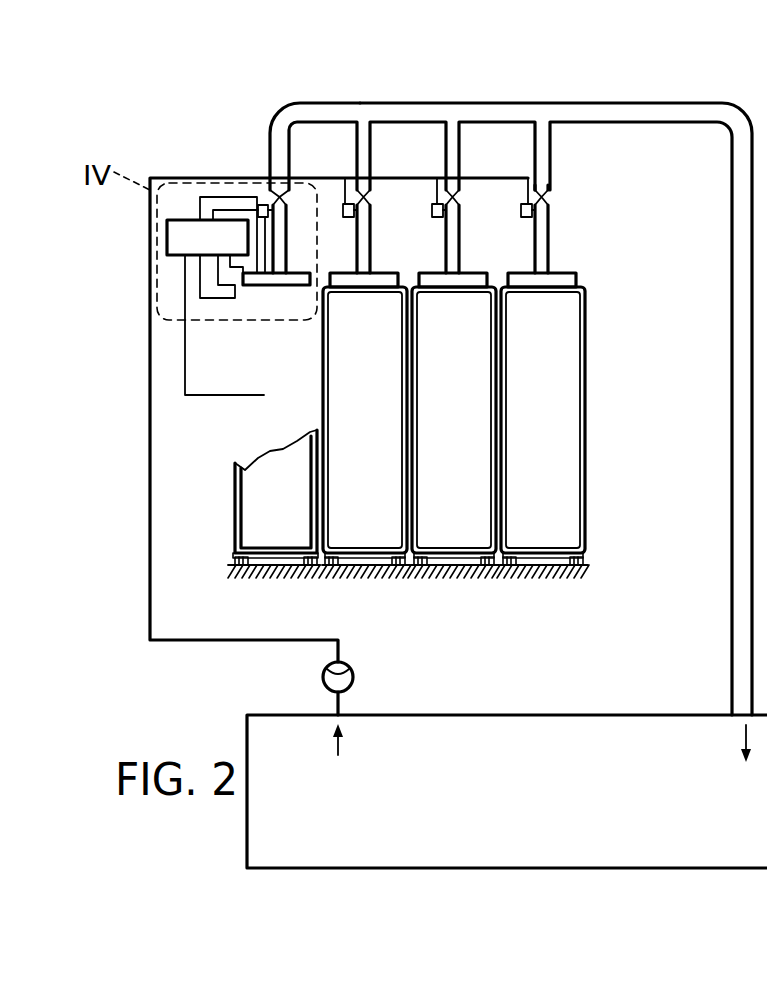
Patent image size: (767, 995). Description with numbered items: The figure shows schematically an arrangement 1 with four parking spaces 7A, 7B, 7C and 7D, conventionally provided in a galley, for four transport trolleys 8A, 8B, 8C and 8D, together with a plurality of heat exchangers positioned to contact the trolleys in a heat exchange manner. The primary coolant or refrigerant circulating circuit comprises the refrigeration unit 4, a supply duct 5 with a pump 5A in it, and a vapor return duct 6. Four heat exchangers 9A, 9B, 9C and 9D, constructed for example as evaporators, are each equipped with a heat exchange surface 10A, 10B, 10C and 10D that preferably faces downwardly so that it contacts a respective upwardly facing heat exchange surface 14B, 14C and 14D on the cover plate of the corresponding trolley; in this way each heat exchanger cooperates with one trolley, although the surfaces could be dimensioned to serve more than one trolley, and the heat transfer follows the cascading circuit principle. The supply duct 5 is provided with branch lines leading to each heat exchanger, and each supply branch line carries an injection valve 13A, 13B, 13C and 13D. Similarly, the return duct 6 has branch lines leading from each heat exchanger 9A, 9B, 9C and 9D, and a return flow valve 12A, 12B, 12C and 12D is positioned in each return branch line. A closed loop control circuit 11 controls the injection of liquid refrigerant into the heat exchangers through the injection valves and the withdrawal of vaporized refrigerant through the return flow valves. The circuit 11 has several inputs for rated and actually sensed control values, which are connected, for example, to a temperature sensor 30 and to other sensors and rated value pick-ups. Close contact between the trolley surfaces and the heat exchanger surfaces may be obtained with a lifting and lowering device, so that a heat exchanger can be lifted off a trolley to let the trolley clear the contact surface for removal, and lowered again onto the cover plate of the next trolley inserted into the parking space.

The cooling apparatus 1 is at (254, 95).
The refrigeration unit 4 is at (665, 730).
The supply duct 5 is at (150, 576).
The pump 5A is at (323, 677).
The vapor return duct 6 is at (742, 490).
The parking space 7A is at (276, 566).
The parking space 7B is at (362, 566).
The parking space 7C is at (447, 566).
The parking space 7D is at (541, 566).
The transport trolley 8A is at (266, 503).
The transport trolley 8B is at (383, 465).
The transport trolley 8C is at (472, 465).
The transport trolley 8D is at (561, 465).
The heat exchanger 9A is at (280, 257).
The heat exchanger 9B is at (362, 246).
The heat exchanger 9C is at (452, 248).
The heat exchanger 9D is at (545, 249).
The heat exchange surface 10A is at (270, 290).
The heat exchange surface 10B is at (377, 293).
The heat exchange surface 10C is at (465, 293).
The heat exchange surface 10D is at (554, 293).
The closed loop control circuit 11 is at (170, 244).
The return flow valve 12A is at (293, 122).
The return flow valve 12B is at (360, 199).
The return flow valve 12C is at (450, 195).
The return flow valve 12D is at (550, 197).
The injection valve 13A is at (257, 204).
The injection valve 13B is at (343, 207).
The injection valve 13C is at (434, 208).
The injection valve 13D is at (522, 208).
The heat exchange surface 14B is at (345, 295).
The heat exchange surface 14C is at (434, 295).
The heat exchange surface 14D is at (523, 295).
The temperature sensor 30 is at (262, 387).